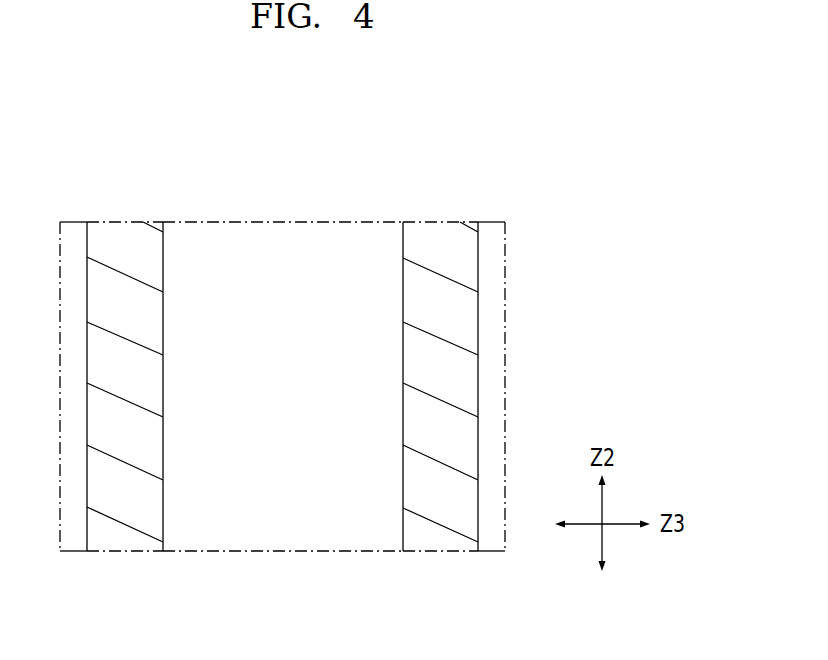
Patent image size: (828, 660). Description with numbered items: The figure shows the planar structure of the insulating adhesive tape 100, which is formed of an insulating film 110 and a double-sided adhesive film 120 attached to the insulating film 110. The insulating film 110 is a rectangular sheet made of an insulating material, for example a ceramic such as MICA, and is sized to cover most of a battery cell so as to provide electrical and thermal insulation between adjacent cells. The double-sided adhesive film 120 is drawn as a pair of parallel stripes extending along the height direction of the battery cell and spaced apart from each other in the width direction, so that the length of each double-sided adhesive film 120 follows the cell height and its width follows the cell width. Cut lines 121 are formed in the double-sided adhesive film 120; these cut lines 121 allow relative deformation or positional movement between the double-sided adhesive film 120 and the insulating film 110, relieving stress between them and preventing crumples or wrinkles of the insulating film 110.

The insulating adhesive tape 100 is at (517, 184).
The insulating film 110 is at (283, 226).
The double-sided adhesive film 120 is at (322, 346).
The cut lines 121 is at (443, 335).